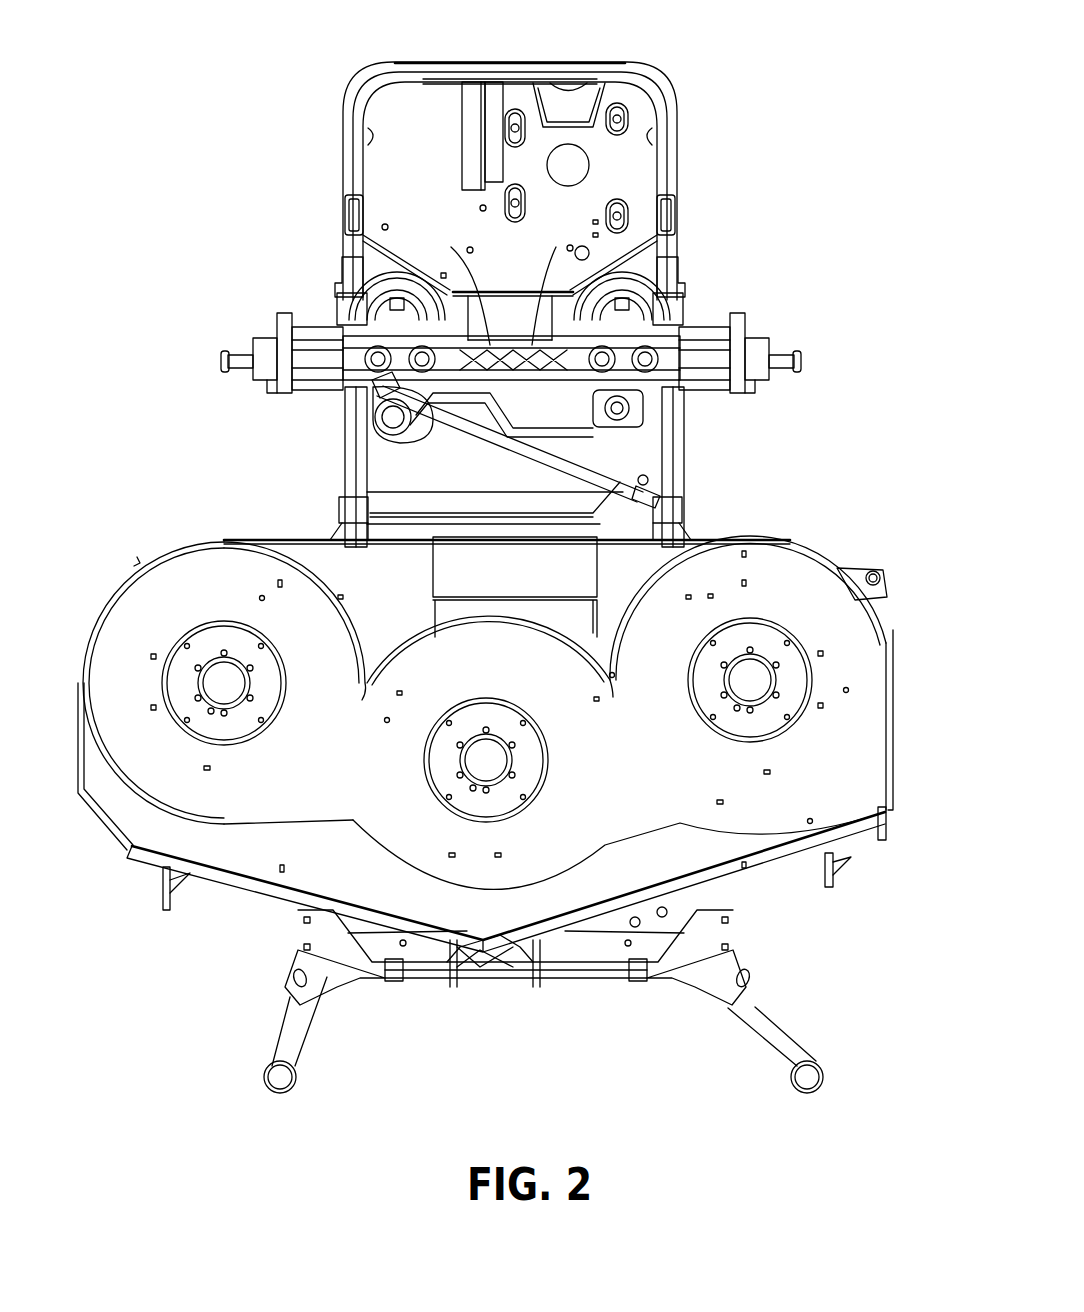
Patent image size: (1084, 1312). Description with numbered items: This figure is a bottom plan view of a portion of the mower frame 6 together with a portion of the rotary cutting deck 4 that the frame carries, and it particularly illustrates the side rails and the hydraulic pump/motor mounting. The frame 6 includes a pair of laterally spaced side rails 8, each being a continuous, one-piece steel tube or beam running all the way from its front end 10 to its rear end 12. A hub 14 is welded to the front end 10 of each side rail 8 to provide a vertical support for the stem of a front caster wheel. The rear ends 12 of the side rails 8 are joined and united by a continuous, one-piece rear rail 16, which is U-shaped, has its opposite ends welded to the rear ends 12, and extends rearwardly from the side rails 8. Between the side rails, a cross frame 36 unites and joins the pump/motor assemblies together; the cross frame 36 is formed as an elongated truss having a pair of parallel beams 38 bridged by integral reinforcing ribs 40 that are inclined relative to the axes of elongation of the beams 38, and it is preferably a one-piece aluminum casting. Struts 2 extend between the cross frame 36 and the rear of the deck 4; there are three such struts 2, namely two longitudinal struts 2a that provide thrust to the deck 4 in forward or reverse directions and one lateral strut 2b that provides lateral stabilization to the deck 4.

The struts 2 is at (712, 457).
The longitudinal struts 2a is at (353, 455).
The lateral strut 2b is at (460, 430).
The rotary cutting deck 4 is at (801, 533).
The frame 6 is at (686, 176).
The side rails 8 is at (345, 242).
The front end 10 is at (303, 1047).
The rear end 12 is at (343, 215).
The hub 14 is at (275, 1068).
The rear rail 16 is at (517, 62).
The cross frame 36 is at (510, 328).
The parallel beams 38 is at (640, 268).
The reinforcing ribs 40 is at (485, 345).